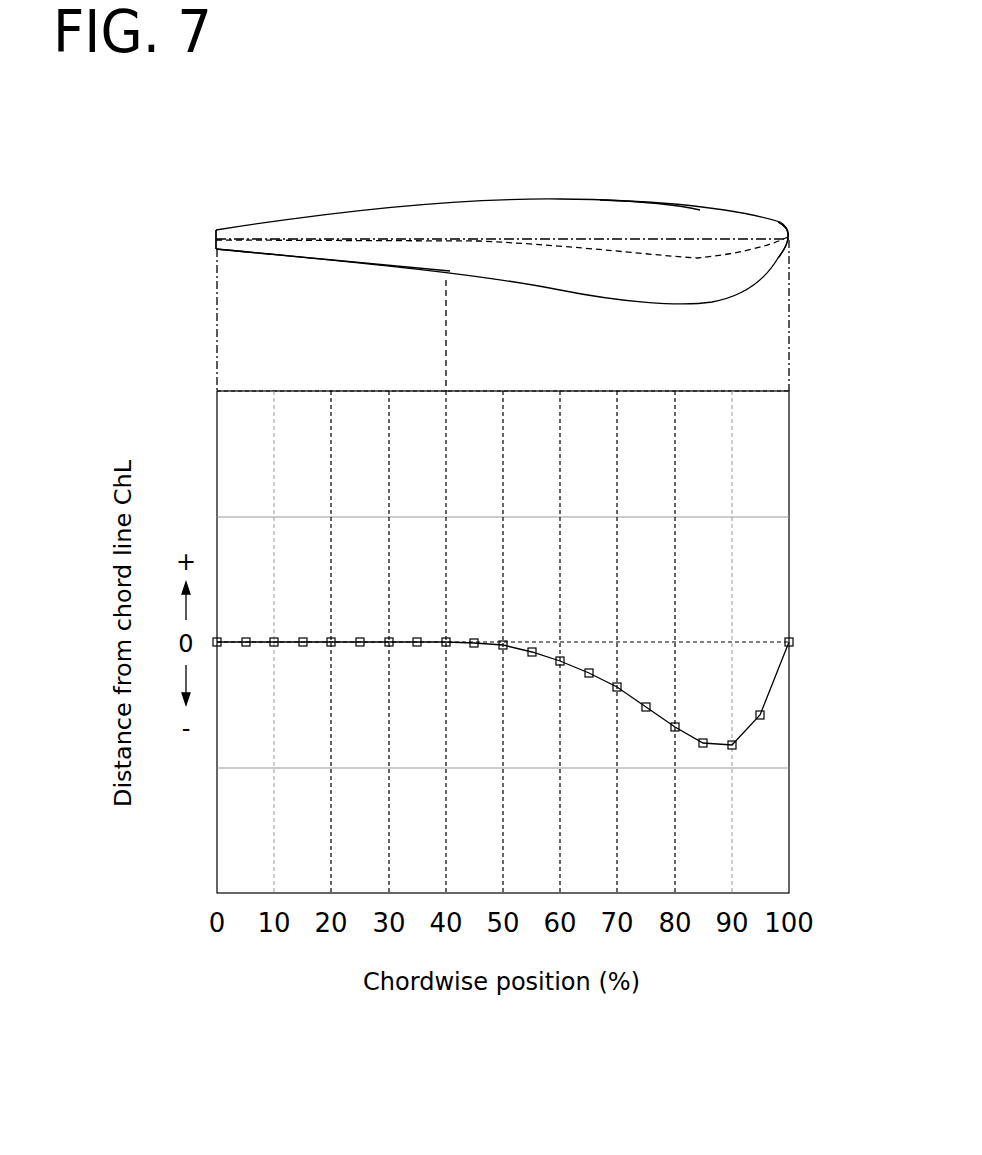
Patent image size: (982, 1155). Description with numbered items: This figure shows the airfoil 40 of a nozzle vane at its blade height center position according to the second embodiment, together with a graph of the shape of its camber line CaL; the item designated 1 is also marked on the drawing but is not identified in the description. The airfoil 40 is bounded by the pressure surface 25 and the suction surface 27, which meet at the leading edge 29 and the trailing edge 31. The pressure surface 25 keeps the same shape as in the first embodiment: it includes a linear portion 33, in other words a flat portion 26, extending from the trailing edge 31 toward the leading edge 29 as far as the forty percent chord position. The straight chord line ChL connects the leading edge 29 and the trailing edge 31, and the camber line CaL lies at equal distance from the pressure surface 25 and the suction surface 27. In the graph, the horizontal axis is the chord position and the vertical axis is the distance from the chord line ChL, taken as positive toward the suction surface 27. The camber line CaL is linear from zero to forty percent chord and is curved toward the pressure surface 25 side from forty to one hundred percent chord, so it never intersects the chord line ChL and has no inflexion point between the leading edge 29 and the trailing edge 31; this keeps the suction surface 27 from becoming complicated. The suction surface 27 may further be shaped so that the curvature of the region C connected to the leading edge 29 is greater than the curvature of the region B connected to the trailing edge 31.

The blade 1 is at (502, 214).
The pressure surface 25 is at (603, 296).
The flat portion 26 is at (333, 299).
The suction surface 27 is at (545, 198).
The leading edge 29 is at (790, 239).
The trailing edge 31 is at (216, 239).
The linear portion 33 is at (327, 259).
The airfoil 40 is at (652, 209).
The region B is at (221, 208).
The region C is at (806, 206).
The chord line ChL is at (700, 238).
The camber line CaL is at (698, 259).